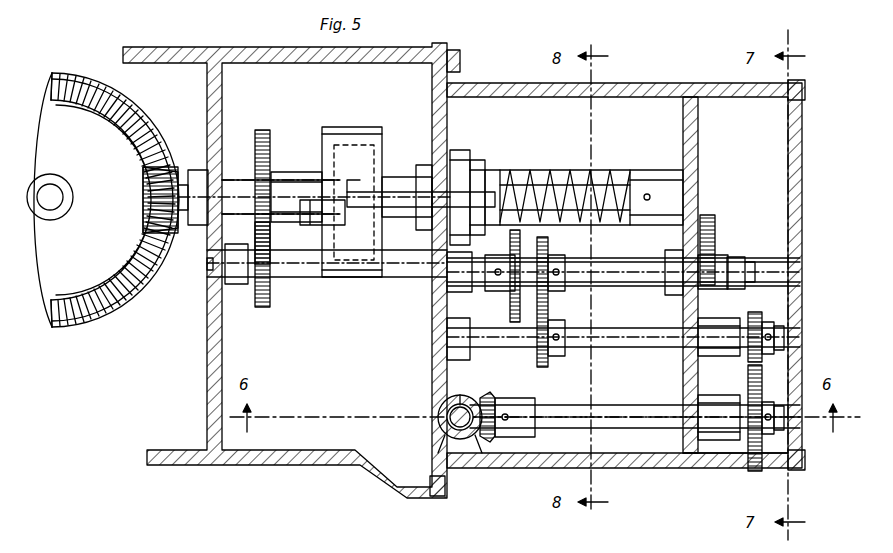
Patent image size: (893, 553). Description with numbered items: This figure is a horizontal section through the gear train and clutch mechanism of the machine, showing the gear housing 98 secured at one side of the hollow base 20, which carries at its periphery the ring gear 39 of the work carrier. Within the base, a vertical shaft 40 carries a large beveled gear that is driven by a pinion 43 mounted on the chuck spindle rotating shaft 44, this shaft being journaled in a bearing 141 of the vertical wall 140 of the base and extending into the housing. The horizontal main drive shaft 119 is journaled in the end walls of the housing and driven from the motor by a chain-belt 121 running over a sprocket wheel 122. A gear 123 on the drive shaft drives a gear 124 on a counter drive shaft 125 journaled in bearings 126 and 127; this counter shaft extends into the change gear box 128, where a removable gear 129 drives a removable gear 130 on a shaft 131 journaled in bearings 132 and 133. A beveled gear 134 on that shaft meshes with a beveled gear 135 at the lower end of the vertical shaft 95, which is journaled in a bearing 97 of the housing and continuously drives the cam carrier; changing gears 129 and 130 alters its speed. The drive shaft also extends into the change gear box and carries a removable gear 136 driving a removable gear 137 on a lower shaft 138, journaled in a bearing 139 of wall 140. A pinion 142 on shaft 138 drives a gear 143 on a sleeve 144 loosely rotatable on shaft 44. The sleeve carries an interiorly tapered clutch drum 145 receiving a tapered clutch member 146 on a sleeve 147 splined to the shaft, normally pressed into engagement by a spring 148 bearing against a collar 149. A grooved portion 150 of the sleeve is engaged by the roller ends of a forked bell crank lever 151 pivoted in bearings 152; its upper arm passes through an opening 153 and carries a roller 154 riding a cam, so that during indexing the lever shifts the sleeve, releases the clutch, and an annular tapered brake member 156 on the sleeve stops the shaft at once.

The base 20 is at (322, 466).
The ring gear 39 is at (75, 325).
The vertical shaft 40 is at (56, 193).
The driving pinion 43 is at (145, 218).
The shaft 44 is at (575, 185).
The vertical shaft 95 is at (448, 420).
The bearing 97 is at (440, 446).
The gear housing 98 is at (503, 468).
The main drive shaft 119 is at (628, 272).
The chain-belt 121 is at (500, 240).
The sprocket wheel 122 is at (518, 250).
The gear 123 is at (552, 258).
The gear 124 is at (537, 343).
The counter drive shaft 125 is at (618, 340).
The bearing 126 is at (470, 322).
The bearing 127 is at (719, 337).
The change gear box 128 is at (712, 466).
The removable gear 129 is at (765, 302).
The removable gear 130 is at (750, 445).
The shaft 131 is at (637, 397).
The bearing 132 is at (717, 405).
The bearing 133 is at (530, 400).
The beveled gear 134 is at (492, 400).
The beveled gear 135 is at (457, 398).
The removable gear 136 is at (745, 260).
The removable gear 137 is at (715, 232).
The shaft 138 is at (398, 277).
The bearing 139 is at (676, 250).
The vertical wall 140 is at (236, 284).
The bearing 141 is at (237, 170).
The pinion 142 is at (270, 295).
The gear 143 is at (270, 165).
The sleeve 144 is at (296, 197).
The clutch drum 145 is at (330, 127).
The clutch member 146 is at (356, 143).
The sleeve 147 is at (393, 177).
The spring 148 is at (530, 178).
The collar 149 is at (656, 197).
The annularly grooved portion 150 is at (495, 170).
The forked bell crank lever 151 is at (404, 207).
The bearings 152 is at (480, 158).
The opening 153 is at (460, 150).
The roller 154 is at (320, 225).
The brake member 156 is at (422, 165).